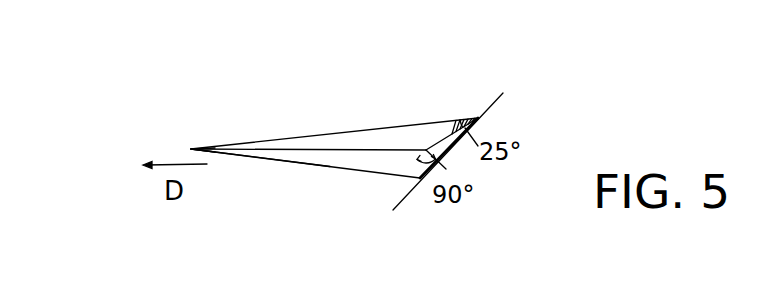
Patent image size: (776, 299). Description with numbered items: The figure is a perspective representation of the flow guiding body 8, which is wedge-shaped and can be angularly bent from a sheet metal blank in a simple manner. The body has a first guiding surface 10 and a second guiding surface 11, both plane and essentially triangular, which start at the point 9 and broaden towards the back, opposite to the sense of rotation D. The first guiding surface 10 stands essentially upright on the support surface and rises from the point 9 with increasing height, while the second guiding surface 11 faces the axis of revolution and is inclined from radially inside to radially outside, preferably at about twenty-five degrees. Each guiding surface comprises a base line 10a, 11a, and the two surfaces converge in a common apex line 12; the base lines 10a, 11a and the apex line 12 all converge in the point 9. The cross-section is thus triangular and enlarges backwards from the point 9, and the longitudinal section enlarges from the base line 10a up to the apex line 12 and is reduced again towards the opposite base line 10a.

The flow guiding body 8 is at (329, 118).
The point 9 is at (190, 150).
The first guiding surface 10 is at (385, 171).
The base line 10a is at (307, 164).
The second guiding surface 11 is at (424, 136).
The base line 11a is at (378, 130).
The apex line 12 is at (292, 148).